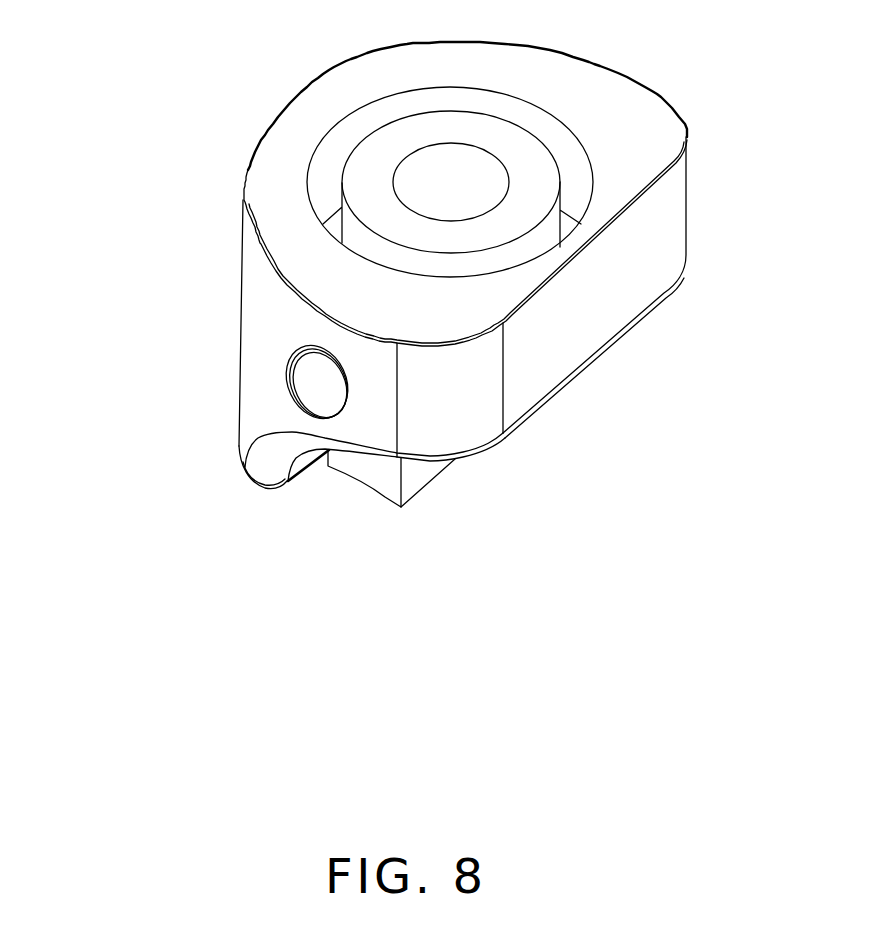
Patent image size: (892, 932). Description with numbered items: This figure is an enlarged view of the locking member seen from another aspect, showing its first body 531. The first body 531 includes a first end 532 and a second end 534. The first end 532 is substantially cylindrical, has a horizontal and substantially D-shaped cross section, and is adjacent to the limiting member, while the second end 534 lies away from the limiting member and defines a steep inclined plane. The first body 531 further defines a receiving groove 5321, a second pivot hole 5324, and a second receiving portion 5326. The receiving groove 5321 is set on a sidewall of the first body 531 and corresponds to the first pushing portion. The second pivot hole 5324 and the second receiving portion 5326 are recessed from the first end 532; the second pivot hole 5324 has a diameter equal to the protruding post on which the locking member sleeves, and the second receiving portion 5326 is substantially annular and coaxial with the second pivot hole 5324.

The first body 531 is at (108, 242).
The first end 532 is at (262, 283).
The second end 534 is at (247, 443).
The receiving groove 5321 is at (332, 395).
The second pivot hole 5324 is at (437, 170).
The second receiving portion 5326 is at (577, 172).